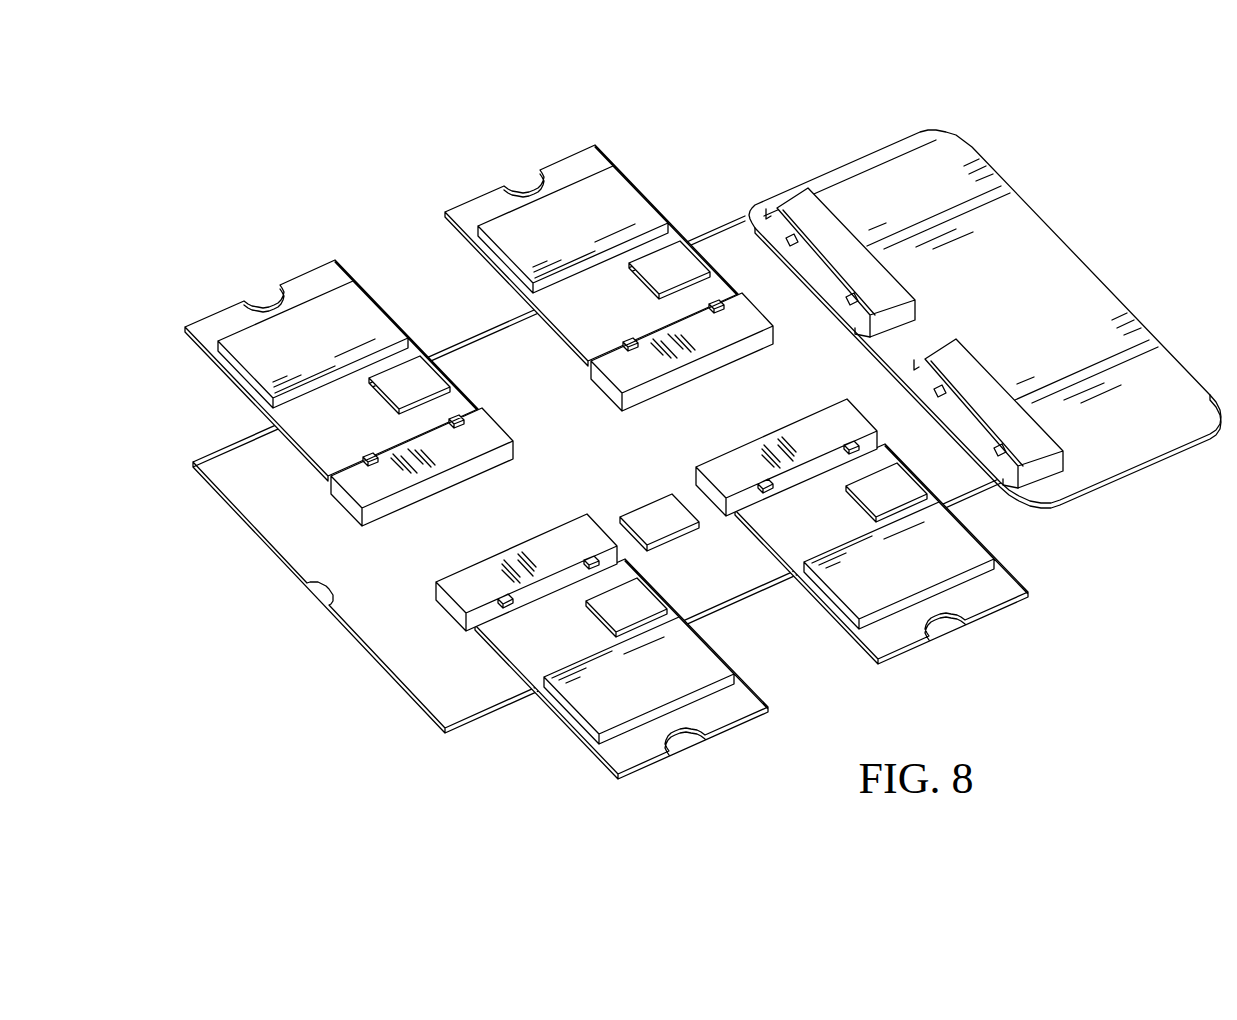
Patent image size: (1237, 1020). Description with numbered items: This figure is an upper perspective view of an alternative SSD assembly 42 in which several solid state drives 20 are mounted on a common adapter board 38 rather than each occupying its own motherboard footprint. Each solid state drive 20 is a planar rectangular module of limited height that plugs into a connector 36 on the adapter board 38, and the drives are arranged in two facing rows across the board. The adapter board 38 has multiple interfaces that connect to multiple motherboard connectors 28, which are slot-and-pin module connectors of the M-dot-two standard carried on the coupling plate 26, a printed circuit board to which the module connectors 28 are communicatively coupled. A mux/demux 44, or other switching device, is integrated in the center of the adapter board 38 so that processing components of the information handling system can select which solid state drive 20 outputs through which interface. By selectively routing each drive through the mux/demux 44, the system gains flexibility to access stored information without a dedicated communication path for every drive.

The SSD assembly 42 is at (703, 437).
The solid state drive 20 is at (606, 454).
The card connector 36 is at (498, 436).
The adapter board 38 is at (480, 342).
The coupling plate 26 is at (1097, 292).
The module connector 28 is at (843, 233).
The mux/demux 44 is at (632, 488).